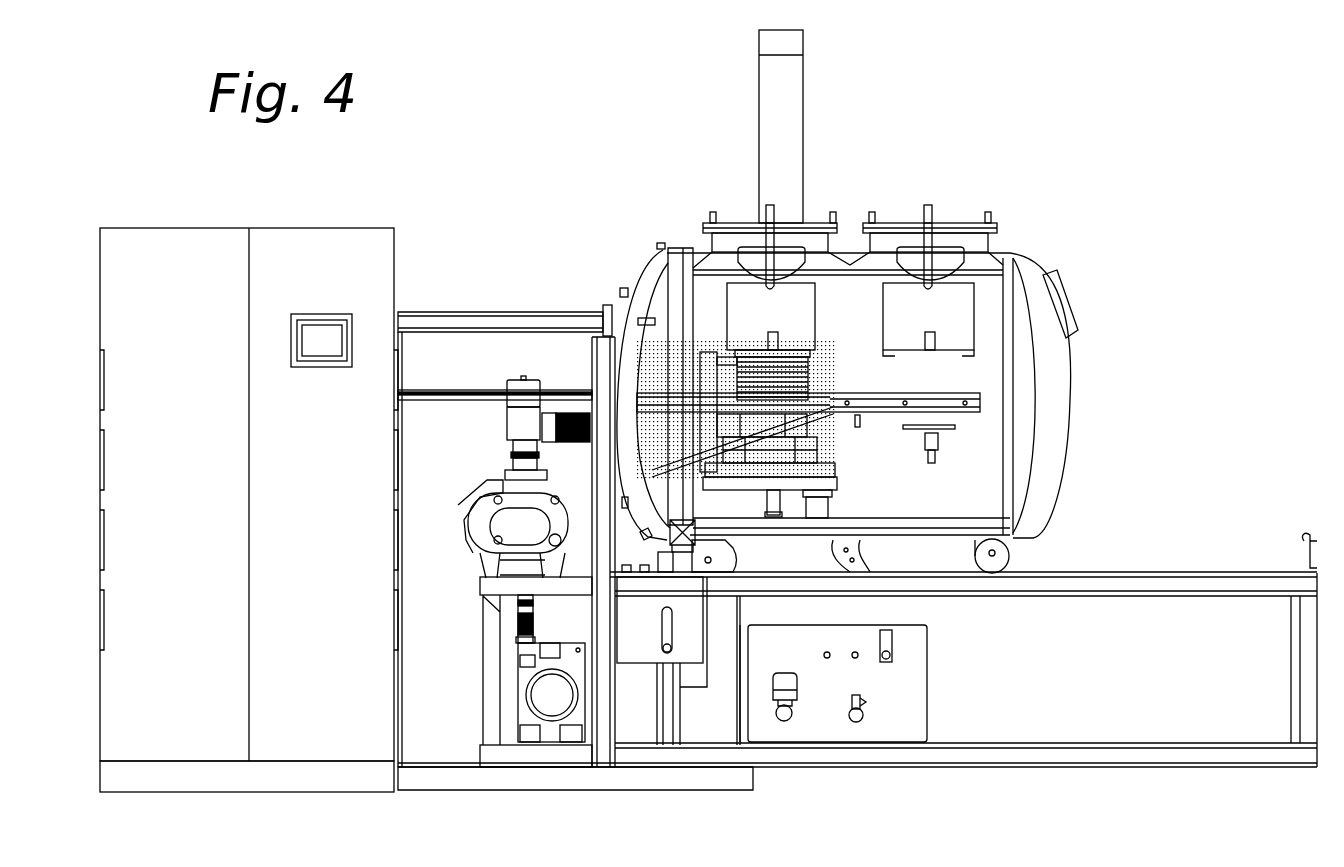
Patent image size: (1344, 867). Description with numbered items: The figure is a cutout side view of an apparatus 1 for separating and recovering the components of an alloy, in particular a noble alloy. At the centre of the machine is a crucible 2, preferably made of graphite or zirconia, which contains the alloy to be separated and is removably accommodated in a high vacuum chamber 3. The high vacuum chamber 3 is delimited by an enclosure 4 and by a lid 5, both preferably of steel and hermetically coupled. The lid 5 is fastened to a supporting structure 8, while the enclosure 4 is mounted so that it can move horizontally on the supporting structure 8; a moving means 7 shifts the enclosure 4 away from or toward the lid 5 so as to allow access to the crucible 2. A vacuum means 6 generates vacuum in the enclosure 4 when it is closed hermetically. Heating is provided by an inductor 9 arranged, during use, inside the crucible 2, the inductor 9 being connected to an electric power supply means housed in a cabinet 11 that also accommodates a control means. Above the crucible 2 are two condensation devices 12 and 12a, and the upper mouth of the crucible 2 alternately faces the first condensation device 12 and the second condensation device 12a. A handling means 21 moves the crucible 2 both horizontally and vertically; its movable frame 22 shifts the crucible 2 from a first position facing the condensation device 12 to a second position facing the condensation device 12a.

The apparatus 1 is at (573, 158).
The crucible 2 is at (808, 352).
The high vacuum chamber 3 is at (1017, 387).
The enclosure 4 is at (1022, 264).
The lid 5 is at (643, 272).
The vacuum means 6 is at (537, 697).
The moving means 7 is at (1032, 549).
The supporting structure 8 is at (600, 373).
The inductor 9 is at (803, 377).
The cabinet 11 is at (175, 268).
The first condensation device 12 is at (716, 299).
The second condensation device 12a is at (879, 288).
The handling means 21 is at (674, 383).
The frame 22 is at (817, 433).